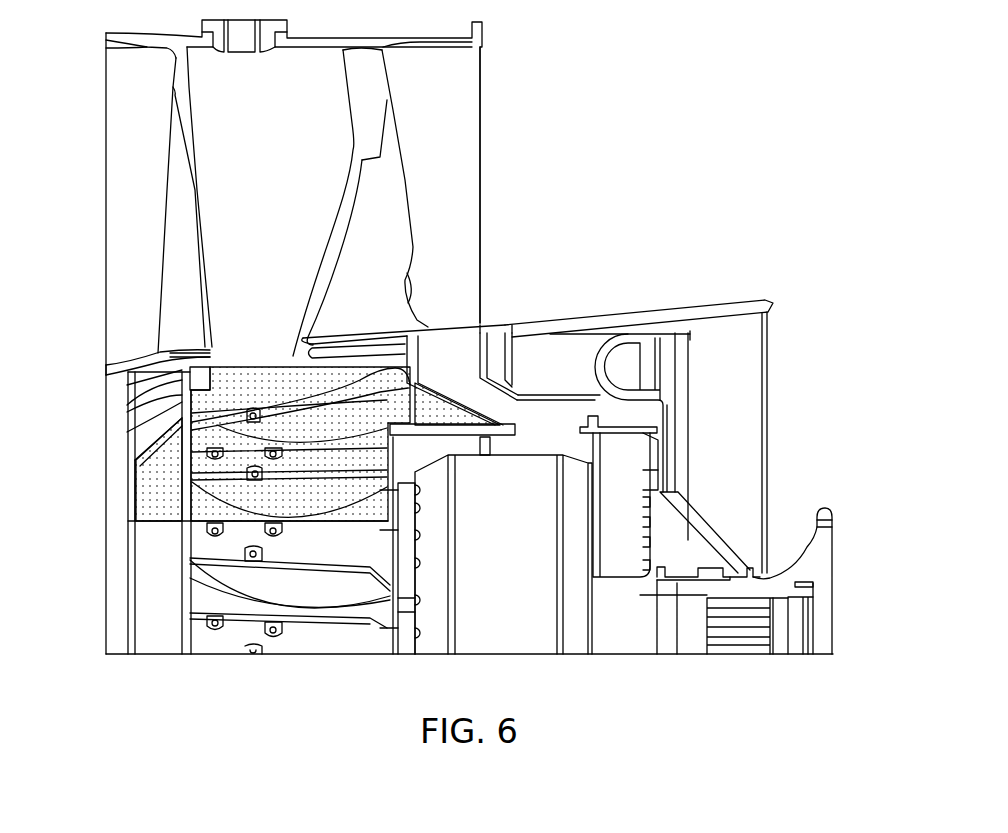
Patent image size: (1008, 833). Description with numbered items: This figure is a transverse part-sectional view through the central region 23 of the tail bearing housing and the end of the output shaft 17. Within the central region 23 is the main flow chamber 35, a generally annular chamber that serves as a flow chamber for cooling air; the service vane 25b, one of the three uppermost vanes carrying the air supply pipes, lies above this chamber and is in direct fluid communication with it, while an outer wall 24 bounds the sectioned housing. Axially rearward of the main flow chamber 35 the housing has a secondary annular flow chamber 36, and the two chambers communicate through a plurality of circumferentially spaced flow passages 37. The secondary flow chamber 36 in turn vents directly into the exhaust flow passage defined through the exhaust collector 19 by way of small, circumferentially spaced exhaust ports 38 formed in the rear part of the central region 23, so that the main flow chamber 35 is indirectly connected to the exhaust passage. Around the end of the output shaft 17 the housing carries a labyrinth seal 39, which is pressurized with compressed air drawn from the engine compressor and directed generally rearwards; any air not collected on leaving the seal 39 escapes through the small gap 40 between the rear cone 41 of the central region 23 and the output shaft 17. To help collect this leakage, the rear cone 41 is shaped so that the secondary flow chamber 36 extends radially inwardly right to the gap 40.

The output shaft 17 is at (815, 555).
The exhaust collector 19 is at (620, 171).
The central region 23 is at (135, 452).
The fan casing wall 24 is at (125, 258).
The service vane 25b is at (283, 194).
The main flow chamber 35 is at (183, 472).
The secondary flow chamber 36 is at (457, 357).
The flow passages 37 is at (460, 430).
The exhaust ports 38 is at (510, 370).
The labyrinth seal 39 is at (712, 578).
The gap 40 is at (747, 576).
The rear cone 41 is at (717, 540).